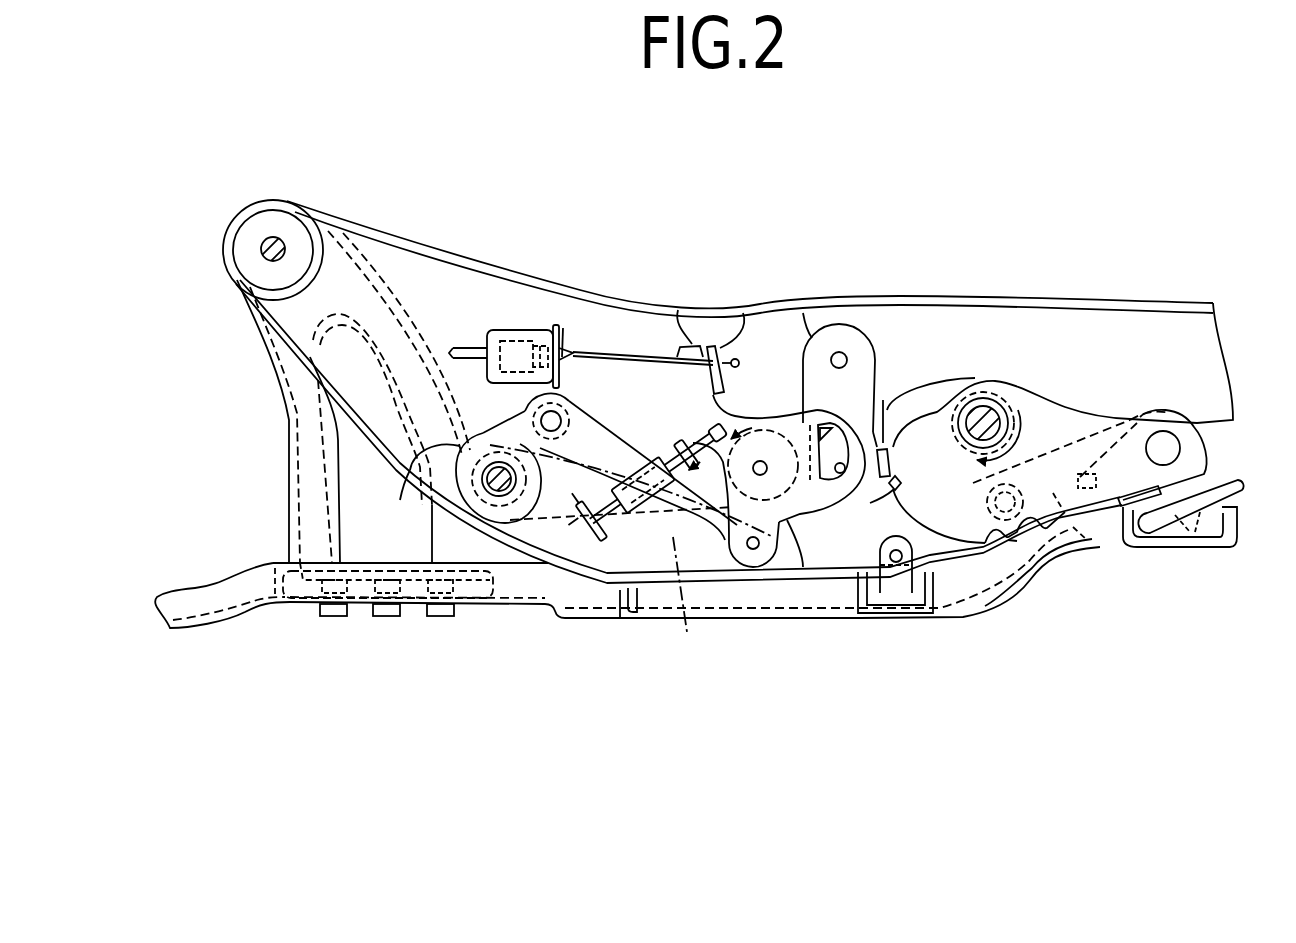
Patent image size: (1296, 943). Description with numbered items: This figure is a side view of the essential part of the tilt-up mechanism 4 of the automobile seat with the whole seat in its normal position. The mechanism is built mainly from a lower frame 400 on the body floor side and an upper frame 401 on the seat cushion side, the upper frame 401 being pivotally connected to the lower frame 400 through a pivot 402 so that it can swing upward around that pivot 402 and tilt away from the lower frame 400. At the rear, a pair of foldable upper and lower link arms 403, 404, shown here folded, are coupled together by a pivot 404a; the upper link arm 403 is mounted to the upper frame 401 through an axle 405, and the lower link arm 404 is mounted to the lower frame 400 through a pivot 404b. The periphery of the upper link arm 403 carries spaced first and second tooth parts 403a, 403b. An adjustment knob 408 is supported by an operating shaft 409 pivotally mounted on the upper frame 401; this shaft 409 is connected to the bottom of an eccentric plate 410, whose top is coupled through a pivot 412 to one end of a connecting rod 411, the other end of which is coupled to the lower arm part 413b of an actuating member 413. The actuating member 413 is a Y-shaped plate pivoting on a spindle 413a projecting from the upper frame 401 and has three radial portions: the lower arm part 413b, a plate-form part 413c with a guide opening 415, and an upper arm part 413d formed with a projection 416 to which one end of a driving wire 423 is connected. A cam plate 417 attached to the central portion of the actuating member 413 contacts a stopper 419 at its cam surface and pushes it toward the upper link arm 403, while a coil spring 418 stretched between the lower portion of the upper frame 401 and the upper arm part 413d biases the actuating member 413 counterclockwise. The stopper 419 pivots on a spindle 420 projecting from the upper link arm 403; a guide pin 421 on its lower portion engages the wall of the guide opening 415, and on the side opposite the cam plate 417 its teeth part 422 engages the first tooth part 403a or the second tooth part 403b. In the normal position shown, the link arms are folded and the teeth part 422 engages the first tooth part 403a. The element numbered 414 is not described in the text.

The tilt-up mechanism 4 is at (477, 263).
The lower frame 400 is at (533, 590).
The upper frame 401 is at (586, 318).
The pivot 402 is at (276, 240).
The upper link arm 403 is at (1107, 410).
The first tooth part 403a is at (903, 482).
The second tooth part 403b is at (1012, 550).
The lower link arm 404 is at (1089, 553).
The pivot 404a is at (1181, 448).
The pivot 404b is at (973, 480).
The axle 405 is at (988, 412).
The adjustment knob 408 is at (631, 506).
The operating shaft 409 is at (488, 487).
The eccentric plate 410 is at (415, 466).
The connecting rod 411 is at (608, 443).
The pivot 412 is at (556, 419).
The actuating member 413 is at (773, 412).
The spindle 413a is at (760, 475).
The lower arm part 413b is at (723, 560).
The plate-form part 413c is at (843, 567).
The upper arm part 413d is at (678, 310).
The spring damper unit 414 is at (753, 550).
The guide opening 415 is at (823, 423).
The projection 416 is at (743, 313).
The cam plate 417 is at (805, 520).
The coil spring 418 is at (640, 548).
The stopper 419 is at (804, 313).
The spindle 420 is at (842, 355).
The guide pin 421 is at (848, 480).
The teeth part 422 is at (938, 412).
The driving wire 423 is at (630, 352).